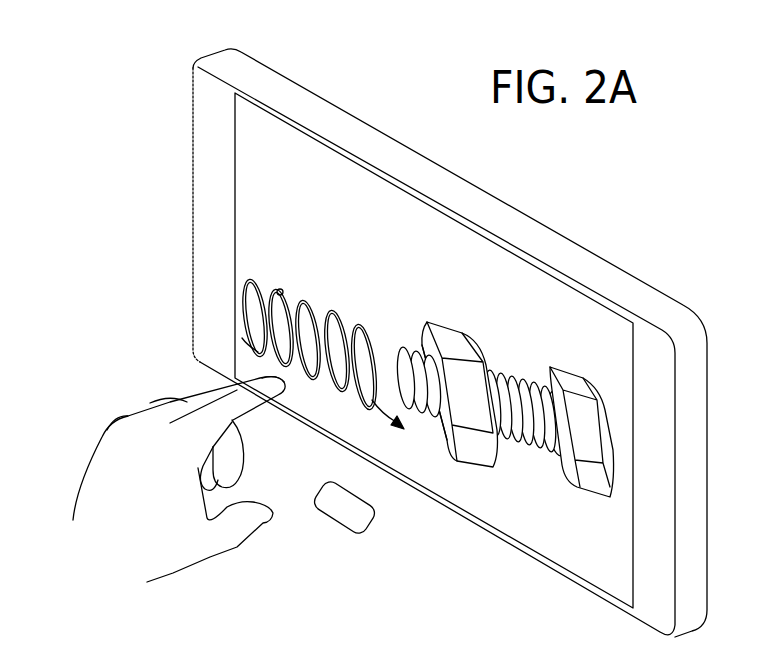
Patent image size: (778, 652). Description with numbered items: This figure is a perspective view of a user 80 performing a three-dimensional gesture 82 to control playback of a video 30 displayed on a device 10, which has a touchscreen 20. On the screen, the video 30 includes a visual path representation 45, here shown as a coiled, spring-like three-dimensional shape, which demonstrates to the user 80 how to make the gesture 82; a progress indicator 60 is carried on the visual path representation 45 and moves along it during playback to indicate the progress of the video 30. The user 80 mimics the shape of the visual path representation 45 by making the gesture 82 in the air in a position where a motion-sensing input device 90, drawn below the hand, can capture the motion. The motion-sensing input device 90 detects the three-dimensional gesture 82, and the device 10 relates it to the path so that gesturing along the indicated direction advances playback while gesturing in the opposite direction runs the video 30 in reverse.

The device 10 is at (128, 88).
The touchscreen 20 is at (552, 302).
The video 30 is at (300, 157).
The visual path representation 45 is at (247, 306).
The progress indicator 60 is at (280, 292).
The user 80 is at (115, 475).
The gesture 82 is at (257, 360).
The motion-sensing input device 90 is at (337, 507).